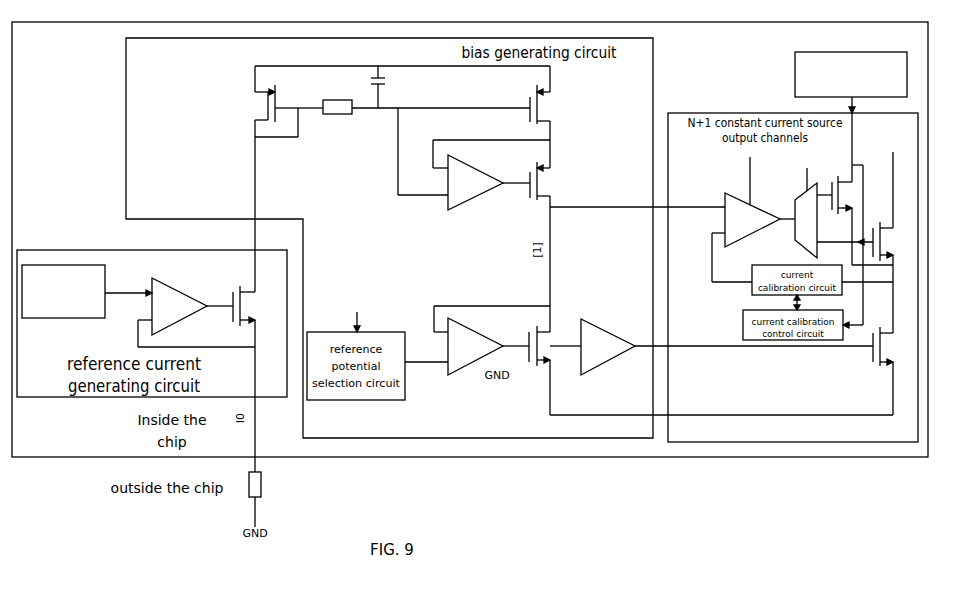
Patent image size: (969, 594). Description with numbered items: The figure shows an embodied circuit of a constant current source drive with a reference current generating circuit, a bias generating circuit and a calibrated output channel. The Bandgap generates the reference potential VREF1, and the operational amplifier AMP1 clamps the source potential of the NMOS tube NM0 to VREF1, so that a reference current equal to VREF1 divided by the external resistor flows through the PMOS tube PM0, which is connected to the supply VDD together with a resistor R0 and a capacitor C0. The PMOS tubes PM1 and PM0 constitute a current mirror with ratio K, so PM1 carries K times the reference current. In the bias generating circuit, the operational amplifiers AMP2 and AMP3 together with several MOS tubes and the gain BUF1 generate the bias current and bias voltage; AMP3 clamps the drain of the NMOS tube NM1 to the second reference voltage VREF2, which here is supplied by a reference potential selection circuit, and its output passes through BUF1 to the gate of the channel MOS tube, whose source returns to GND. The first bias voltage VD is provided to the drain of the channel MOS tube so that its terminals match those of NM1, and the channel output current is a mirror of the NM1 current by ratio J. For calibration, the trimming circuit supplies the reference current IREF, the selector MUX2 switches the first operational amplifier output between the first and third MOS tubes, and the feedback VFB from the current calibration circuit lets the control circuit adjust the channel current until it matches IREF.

The supply voltage rail VDD is at (402, 58).
The PMOS tube PM0 is at (277, 101).
The resistor R0 is at (414, 115).
The capacitor C0 is at (387, 87).
The PMOS tube PM1 is at (526, 95).
The operational amplifier AMP2 is at (474, 162).
The bandgap voltage reference Bandgap is at (63, 291).
The reference potential VREF1 is at (128, 286).
The operational amplifier AMP1 is at (196, 312).
The NMOS tube NM0 is at (232, 299).
The second reference voltage VREF2 is at (426, 355).
The operational amplifier AMP3 is at (492, 340).
The NMOS tube NM1 is at (533, 340).
The gain buffer BUF1 is at (711, 347).
The ground GND is at (721, 406).
The reference current IREF is at (851, 82).
The feedback voltage VFB is at (729, 276).
The selector MUX2 is at (825, 213).
The first bias voltage VD is at (867, 276).